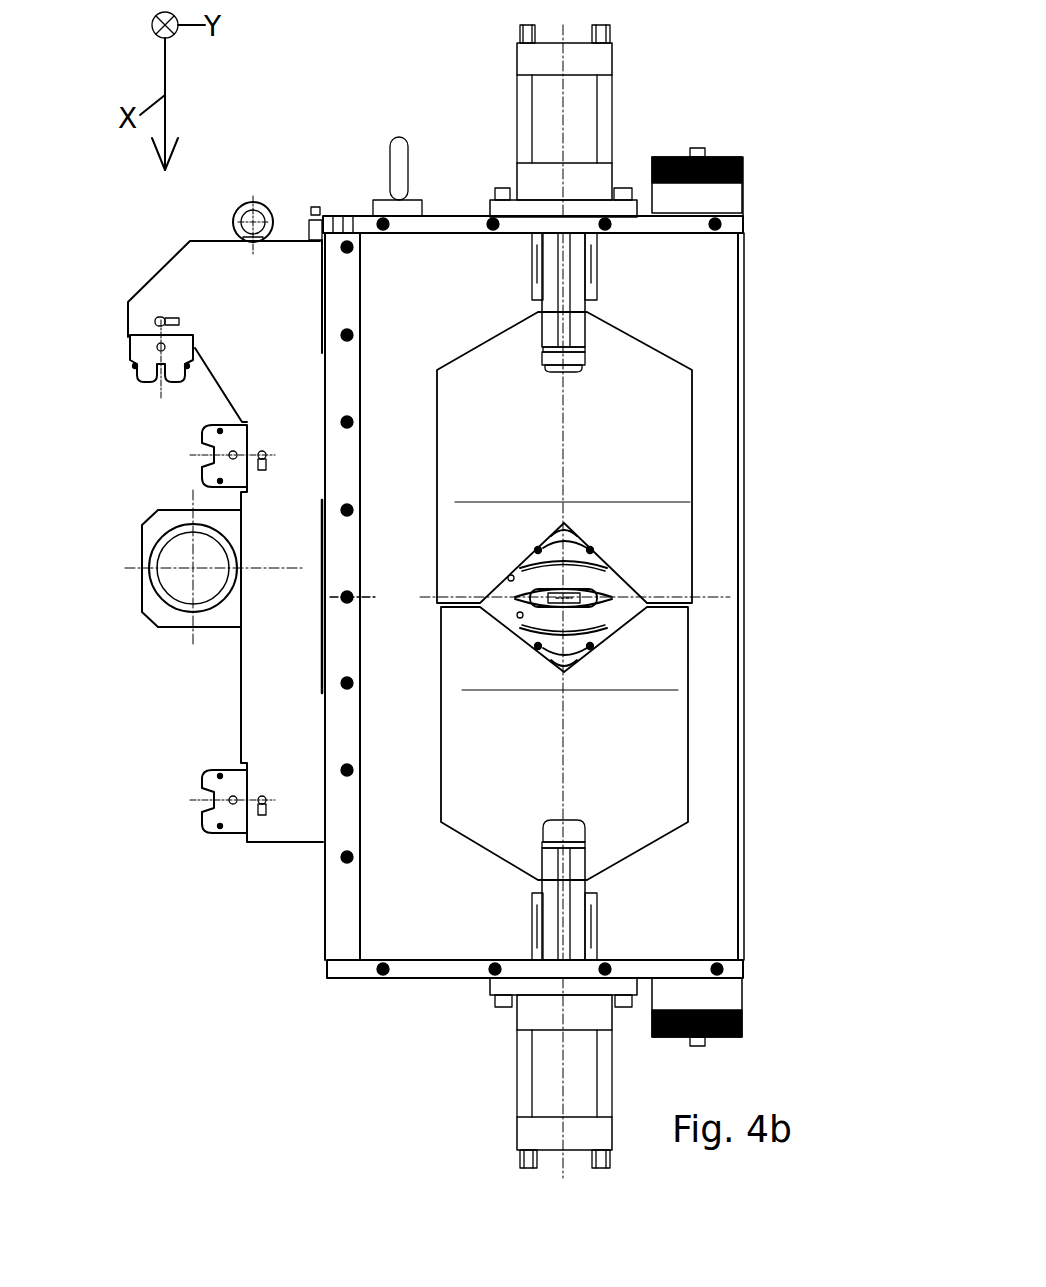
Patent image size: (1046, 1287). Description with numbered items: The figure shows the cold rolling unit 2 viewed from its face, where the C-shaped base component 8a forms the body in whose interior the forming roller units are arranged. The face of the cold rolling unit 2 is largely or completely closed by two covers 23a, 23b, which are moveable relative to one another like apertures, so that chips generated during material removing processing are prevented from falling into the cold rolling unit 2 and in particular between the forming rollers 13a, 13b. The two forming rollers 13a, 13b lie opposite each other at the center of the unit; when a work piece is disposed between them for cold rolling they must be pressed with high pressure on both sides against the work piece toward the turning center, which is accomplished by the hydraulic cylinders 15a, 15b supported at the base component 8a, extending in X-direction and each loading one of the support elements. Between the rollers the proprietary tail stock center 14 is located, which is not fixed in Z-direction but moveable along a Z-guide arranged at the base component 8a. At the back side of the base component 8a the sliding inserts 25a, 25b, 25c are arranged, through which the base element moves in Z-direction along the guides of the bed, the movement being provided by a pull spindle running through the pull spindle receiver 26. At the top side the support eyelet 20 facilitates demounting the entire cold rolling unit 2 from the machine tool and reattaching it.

The cold rolling unit 2 is at (742, 148).
The support eyelet 20 is at (394, 166).
The hydraulic cylinder 15a is at (563, 121).
The hydraulic cylinder 15b is at (563, 1078).
The cover 23a is at (564, 457).
The cover 23b is at (564, 743).
The forming roller 13a is at (593, 575).
The forming roller 13b is at (593, 617).
The tail stock center 14 is at (549, 604).
The sliding insert 25a is at (234, 822).
The sliding insert 25b is at (203, 432).
The sliding insert 25c is at (130, 350).
The pull spindle receiver 26 is at (152, 619).
The base component 8a is at (282, 664).